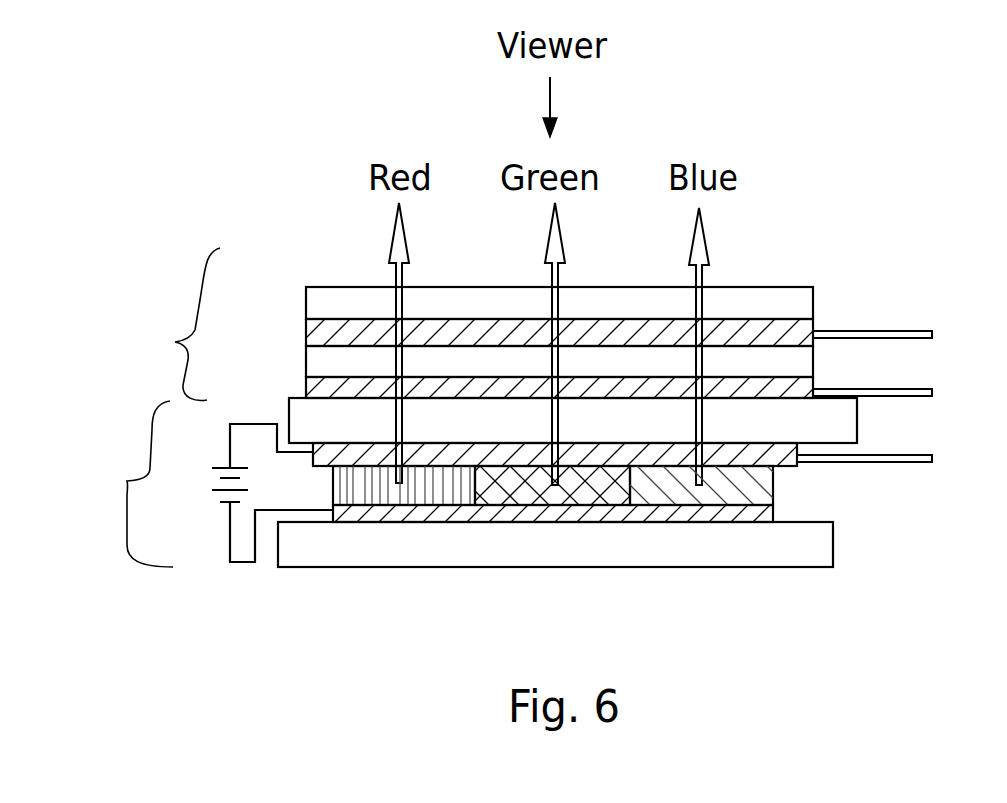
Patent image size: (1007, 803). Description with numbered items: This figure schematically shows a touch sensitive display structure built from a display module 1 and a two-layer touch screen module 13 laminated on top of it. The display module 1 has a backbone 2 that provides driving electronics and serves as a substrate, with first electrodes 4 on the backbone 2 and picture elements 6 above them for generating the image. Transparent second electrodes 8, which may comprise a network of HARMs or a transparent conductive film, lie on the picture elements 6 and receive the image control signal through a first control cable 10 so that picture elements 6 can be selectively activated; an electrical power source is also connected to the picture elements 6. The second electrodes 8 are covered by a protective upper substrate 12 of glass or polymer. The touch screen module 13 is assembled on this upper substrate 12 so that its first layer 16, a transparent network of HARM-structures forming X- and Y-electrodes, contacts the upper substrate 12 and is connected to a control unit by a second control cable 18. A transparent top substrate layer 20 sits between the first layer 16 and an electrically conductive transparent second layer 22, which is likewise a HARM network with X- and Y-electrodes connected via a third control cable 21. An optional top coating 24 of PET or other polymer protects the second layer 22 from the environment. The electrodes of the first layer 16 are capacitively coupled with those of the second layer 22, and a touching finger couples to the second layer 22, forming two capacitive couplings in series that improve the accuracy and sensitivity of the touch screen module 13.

The display module 1 is at (136, 484).
The backbone 2 is at (343, 553).
The first electrodes 4 is at (765, 515).
The picture elements 6 is at (450, 483).
The second electrodes 8 is at (767, 443).
The first control cable 10 is at (923, 460).
The upper substrate 12 is at (300, 413).
The touch screen module 13 is at (180, 324).
The first layer 16 is at (315, 388).
The second control cable 18 is at (922, 388).
The top substrate layer 20 is at (315, 353).
The third control cable 21 is at (922, 332).
The second layer 22 is at (336, 334).
The top coating 24 is at (317, 296).